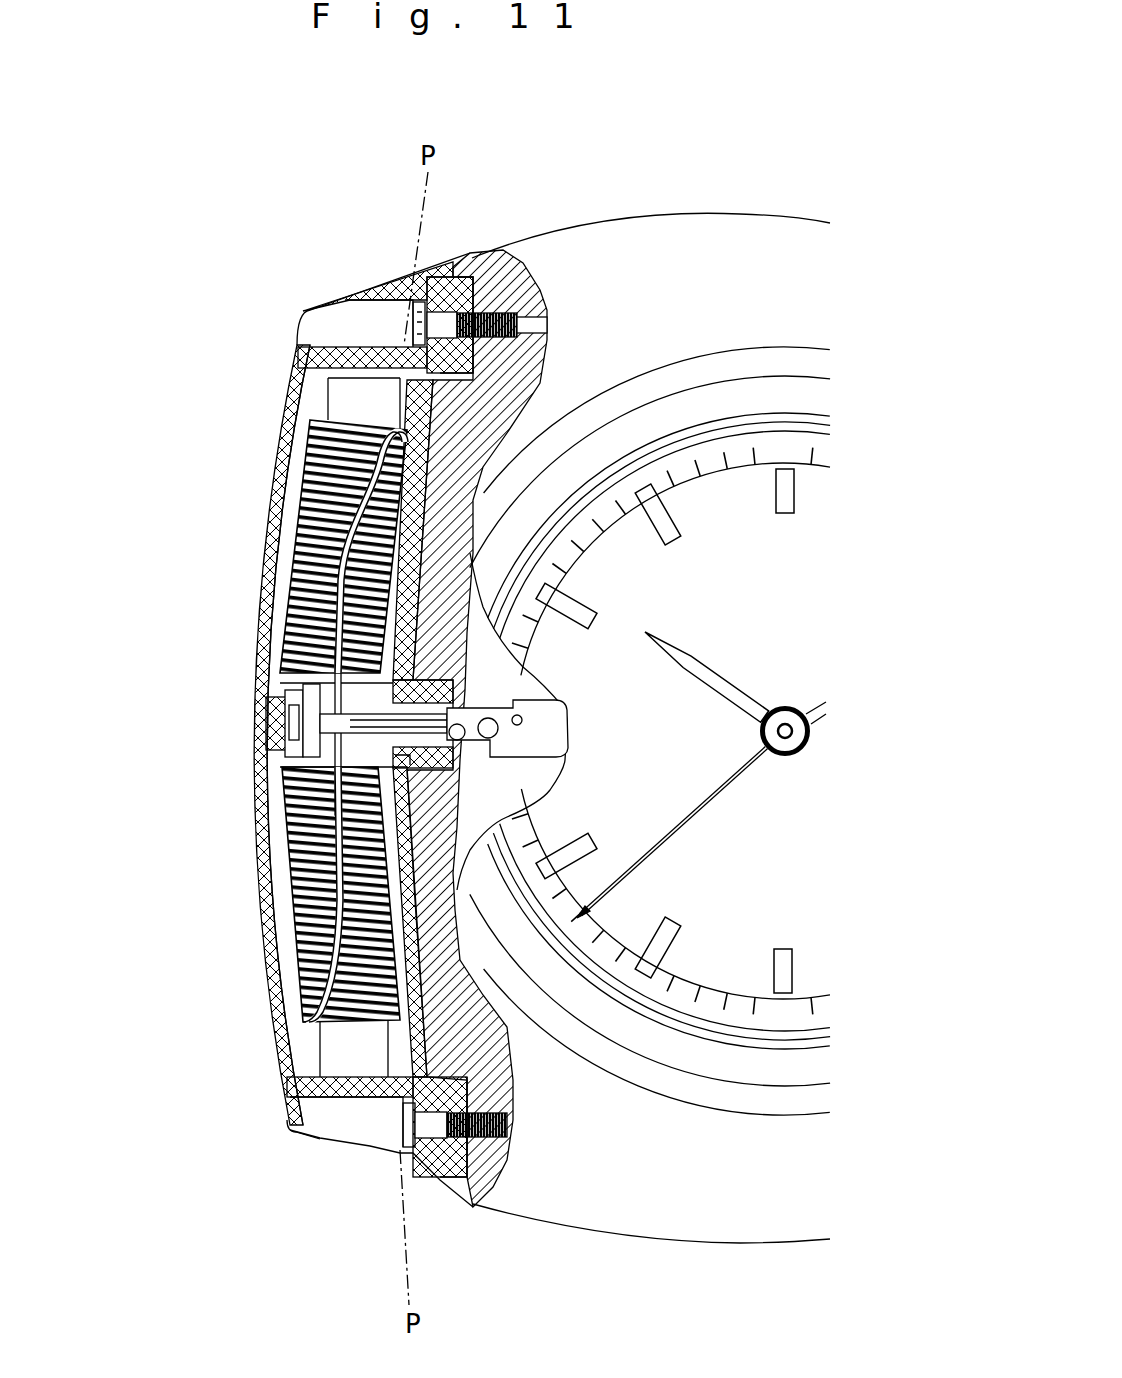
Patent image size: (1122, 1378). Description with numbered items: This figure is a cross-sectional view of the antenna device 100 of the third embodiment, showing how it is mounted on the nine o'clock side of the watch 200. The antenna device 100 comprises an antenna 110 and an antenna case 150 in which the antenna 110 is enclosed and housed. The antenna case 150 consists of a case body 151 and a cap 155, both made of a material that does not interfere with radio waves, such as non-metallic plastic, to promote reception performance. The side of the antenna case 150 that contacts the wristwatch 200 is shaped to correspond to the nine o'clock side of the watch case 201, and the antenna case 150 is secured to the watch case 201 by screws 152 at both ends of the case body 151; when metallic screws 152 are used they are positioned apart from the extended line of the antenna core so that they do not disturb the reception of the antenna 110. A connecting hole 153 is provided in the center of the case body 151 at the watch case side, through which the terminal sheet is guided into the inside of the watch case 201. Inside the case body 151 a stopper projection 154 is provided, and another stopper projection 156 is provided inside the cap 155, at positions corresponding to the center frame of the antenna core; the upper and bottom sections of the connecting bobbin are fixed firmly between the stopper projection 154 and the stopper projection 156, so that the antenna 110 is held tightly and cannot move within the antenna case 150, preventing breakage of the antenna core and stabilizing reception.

The antenna device 100 is at (290, 283).
The antenna 110 is at (292, 512).
The antenna case 150 is at (282, 992).
The case body 151 is at (265, 625).
The screws 152 is at (437, 317).
The connecting hole 153 is at (410, 775).
The stopper projection 154 is at (255, 718).
The cap 155 is at (318, 1137).
The stopper projection 156 is at (335, 812).
The watch 200 is at (650, 205).
The watch case 201 is at (632, 1215).